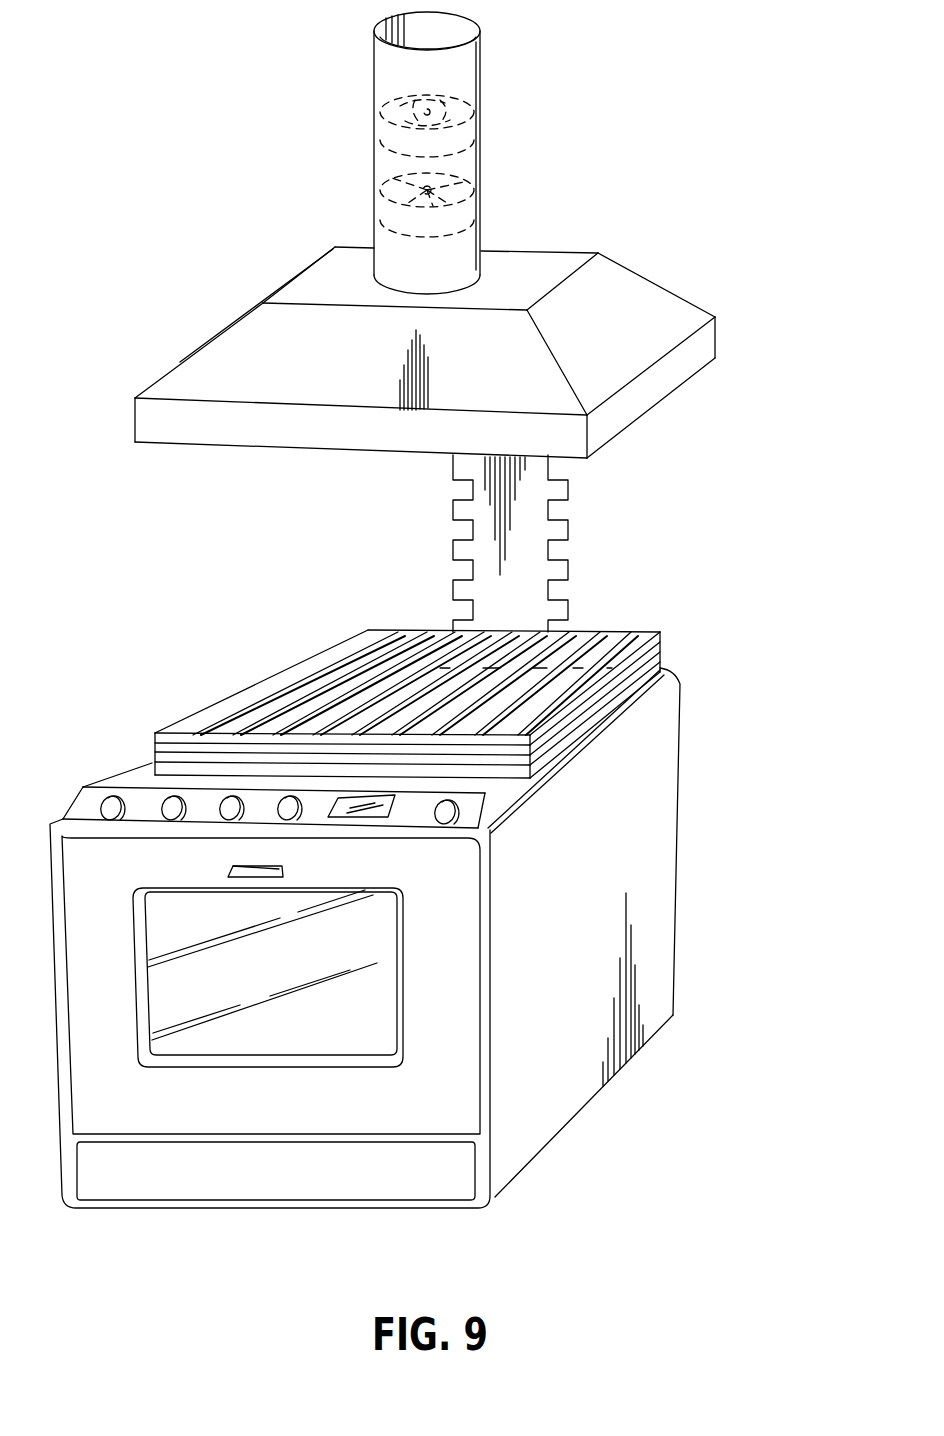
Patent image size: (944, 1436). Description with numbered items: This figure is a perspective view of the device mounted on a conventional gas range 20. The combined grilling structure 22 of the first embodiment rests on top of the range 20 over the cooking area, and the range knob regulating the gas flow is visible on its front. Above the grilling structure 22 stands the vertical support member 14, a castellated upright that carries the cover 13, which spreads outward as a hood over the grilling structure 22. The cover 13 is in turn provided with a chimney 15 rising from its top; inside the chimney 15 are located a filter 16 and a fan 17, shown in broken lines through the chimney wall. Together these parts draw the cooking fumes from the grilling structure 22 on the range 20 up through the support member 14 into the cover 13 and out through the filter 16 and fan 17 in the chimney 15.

The cover 13 is at (657, 282).
The vertical support member 14 is at (567, 538).
The chimney 15 is at (462, 152).
The filter 16 is at (477, 182).
The fan 17 is at (481, 100).
The stove 20 is at (647, 826).
The combined grilling structure 22 is at (660, 658).